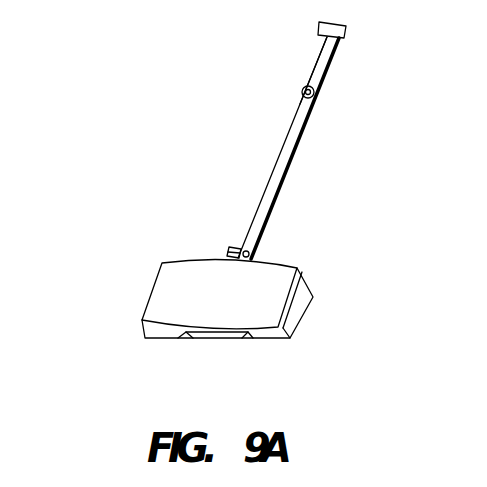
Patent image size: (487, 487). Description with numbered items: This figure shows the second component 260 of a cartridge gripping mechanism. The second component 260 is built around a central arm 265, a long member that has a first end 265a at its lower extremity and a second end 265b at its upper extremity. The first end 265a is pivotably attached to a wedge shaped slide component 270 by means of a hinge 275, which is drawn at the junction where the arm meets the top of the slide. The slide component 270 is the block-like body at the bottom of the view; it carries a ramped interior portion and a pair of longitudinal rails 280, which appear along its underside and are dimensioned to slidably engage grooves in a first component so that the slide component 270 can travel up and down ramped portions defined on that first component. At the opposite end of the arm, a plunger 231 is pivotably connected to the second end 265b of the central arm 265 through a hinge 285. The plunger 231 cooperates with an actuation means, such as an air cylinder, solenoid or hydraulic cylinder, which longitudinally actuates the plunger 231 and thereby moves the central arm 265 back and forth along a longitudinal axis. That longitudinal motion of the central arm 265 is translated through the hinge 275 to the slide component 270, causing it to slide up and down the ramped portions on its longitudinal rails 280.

The second component 260 is at (122, 128).
The plunger 231 is at (347, 31).
The central arm 265 is at (281, 150).
The first end 265a is at (243, 247).
The second end 265b is at (288, 112).
The hinge 285 is at (315, 93).
The hinge 275 is at (226, 250).
The slide component 270 is at (296, 265).
The longitudinal rails 280 is at (250, 340).